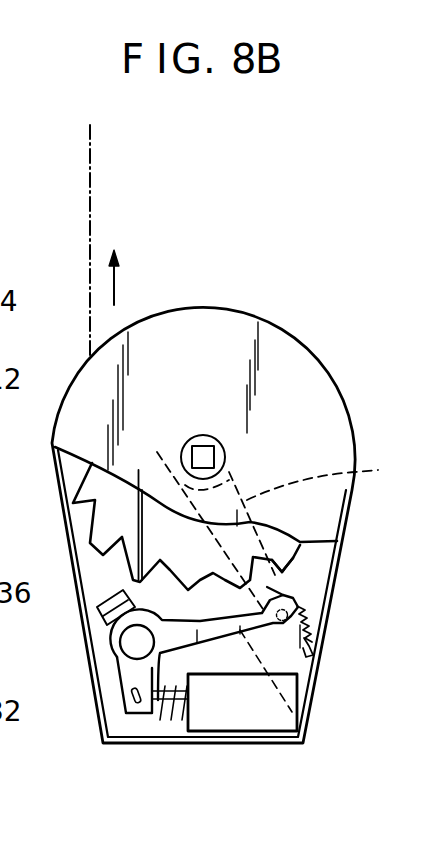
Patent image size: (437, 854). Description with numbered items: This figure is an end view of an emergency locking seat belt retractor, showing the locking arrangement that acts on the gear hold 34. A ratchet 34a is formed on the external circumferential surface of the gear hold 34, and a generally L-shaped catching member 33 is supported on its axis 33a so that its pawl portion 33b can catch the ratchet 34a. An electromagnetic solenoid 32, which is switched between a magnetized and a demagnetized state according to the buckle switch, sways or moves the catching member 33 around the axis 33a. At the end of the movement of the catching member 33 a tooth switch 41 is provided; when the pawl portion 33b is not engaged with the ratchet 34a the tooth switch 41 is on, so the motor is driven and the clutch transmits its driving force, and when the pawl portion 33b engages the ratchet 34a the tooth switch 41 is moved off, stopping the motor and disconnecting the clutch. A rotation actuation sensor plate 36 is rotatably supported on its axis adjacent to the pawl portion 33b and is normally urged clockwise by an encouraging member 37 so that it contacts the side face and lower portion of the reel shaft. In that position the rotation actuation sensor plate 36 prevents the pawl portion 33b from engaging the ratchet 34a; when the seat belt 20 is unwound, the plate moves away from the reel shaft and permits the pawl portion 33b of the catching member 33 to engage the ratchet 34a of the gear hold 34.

The seat belt 20 is at (90, 237).
The electromagnetic solenoid 32 is at (247, 714).
The catching member 33 is at (312, 714).
The axis 33a is at (136, 643).
The pawl portion 33b is at (312, 622).
The gear hold 34 is at (117, 508).
The ratchet 34a is at (262, 582).
The rotation actuation sensor plate 36 is at (286, 532).
The encouraging member 37 is at (310, 652).
The tooth switch 41 is at (88, 622).